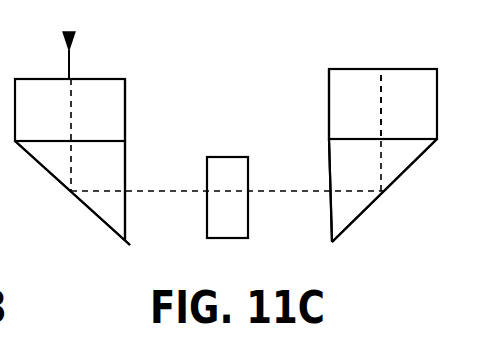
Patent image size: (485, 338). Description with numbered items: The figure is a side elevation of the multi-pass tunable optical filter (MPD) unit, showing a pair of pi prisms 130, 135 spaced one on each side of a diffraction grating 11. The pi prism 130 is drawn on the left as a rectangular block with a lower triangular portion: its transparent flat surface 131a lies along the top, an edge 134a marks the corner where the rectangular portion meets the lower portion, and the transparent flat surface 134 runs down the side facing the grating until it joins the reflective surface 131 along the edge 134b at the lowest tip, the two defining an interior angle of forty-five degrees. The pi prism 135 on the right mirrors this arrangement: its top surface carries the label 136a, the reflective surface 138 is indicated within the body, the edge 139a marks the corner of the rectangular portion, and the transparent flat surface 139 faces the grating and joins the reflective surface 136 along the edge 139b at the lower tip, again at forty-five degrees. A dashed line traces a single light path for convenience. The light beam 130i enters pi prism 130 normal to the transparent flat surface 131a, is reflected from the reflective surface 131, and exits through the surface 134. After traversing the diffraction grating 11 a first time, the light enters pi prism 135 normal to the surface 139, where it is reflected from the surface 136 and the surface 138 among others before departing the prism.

The diffraction grating 11 is at (228, 157).
The pi prism 130 is at (113, 114).
The light beam 130i is at (68, 71).
The reflective surface 131 is at (71, 191).
The transparent flat surface 131a is at (97, 79).
The transparent flat surface 134 is at (128, 183).
The edge 134a is at (125, 141).
The edge 134b is at (130, 245).
The pi prism 135 is at (340, 115).
The reflective surface 136 is at (383, 191).
The top surface of second prism 136a is at (397, 69).
The reflective surface 138 is at (420, 98).
The transparent flat surface 139 is at (332, 186).
The edge 139a is at (329, 140).
The edge 139b is at (332, 242).